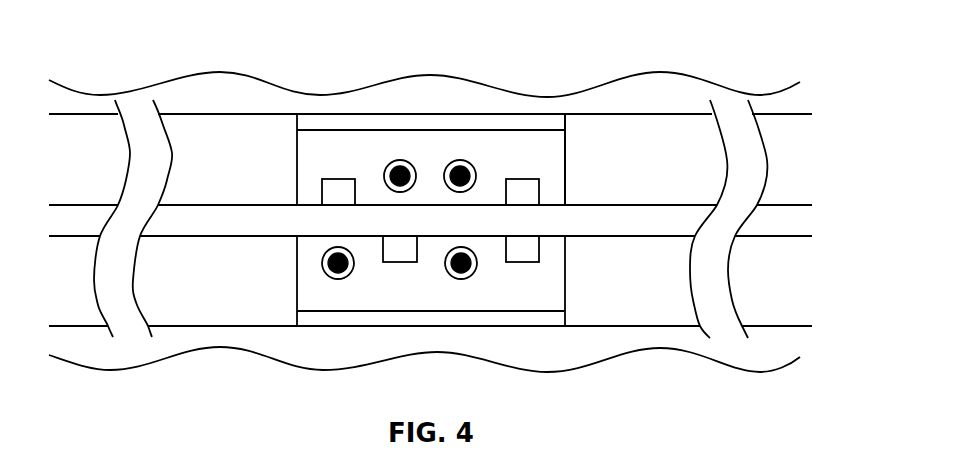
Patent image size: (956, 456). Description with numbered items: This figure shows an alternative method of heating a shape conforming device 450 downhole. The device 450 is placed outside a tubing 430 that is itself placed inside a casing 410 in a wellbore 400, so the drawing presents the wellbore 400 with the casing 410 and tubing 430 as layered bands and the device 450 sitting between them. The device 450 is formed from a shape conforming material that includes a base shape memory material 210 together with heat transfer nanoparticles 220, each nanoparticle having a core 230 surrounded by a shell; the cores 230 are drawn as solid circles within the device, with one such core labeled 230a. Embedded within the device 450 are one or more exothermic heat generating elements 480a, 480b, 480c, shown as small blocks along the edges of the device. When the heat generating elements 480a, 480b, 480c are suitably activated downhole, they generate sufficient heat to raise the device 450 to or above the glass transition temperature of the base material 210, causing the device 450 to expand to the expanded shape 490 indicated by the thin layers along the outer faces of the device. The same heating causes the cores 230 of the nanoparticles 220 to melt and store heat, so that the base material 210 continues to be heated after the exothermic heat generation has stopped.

The wellbore 400 is at (217, 72).
The casing 410 is at (265, 110).
The tubing 430 is at (672, 205).
The shape conforming device 450 is at (565, 183).
The base shape memory material 210 is at (332, 150).
The heat transfer nanoparticles 220 is at (400, 160).
The core 230 is at (472, 268).
The conductive pad 230a is at (323, 265).
The exothermic heat generating element 480a is at (322, 192).
The exothermic heat generating element 480b is at (407, 262).
The exothermic heat generating element 480c is at (540, 247).
The expanded shape 490 is at (497, 133).